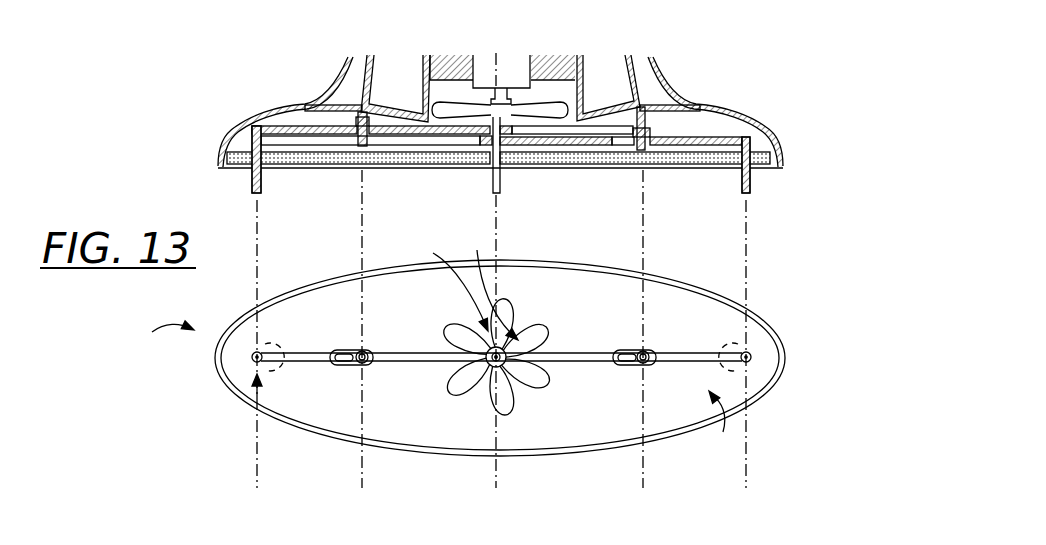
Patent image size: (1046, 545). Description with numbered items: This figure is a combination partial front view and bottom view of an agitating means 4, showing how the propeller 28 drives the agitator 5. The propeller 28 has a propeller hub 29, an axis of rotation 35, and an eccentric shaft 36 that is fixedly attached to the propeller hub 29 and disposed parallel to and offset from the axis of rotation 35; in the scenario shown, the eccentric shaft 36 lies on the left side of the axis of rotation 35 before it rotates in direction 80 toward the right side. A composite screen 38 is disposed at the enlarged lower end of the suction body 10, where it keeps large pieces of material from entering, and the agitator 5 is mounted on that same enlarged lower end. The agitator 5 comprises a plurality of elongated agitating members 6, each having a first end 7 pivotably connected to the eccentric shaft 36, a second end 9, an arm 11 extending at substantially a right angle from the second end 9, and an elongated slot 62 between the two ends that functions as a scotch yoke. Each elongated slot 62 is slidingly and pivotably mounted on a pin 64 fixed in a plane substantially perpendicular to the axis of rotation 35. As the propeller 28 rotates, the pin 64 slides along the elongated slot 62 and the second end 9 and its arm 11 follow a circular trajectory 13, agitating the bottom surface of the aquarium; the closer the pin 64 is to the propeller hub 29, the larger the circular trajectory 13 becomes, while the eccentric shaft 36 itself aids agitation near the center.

The agitating means 4 is at (162, 333).
The agitator 5 is at (718, 425).
The elongated agitating member 6 is at (332, 129).
The first end 7 is at (453, 283).
The second end 9 is at (255, 393).
The suction body 10 is at (744, 110).
The arm 11 is at (252, 188).
The circular trajectory 13 is at (280, 376).
The propeller 28 is at (538, 97).
The propeller hub 29 is at (483, 93).
The axis of rotation 35 is at (498, 228).
The eccentric shaft 36 is at (501, 180).
The composite screen 38 is at (310, 167).
The elongated slot 62 is at (352, 350).
The pin 64 is at (357, 136).
The direction 80 is at (486, 281).